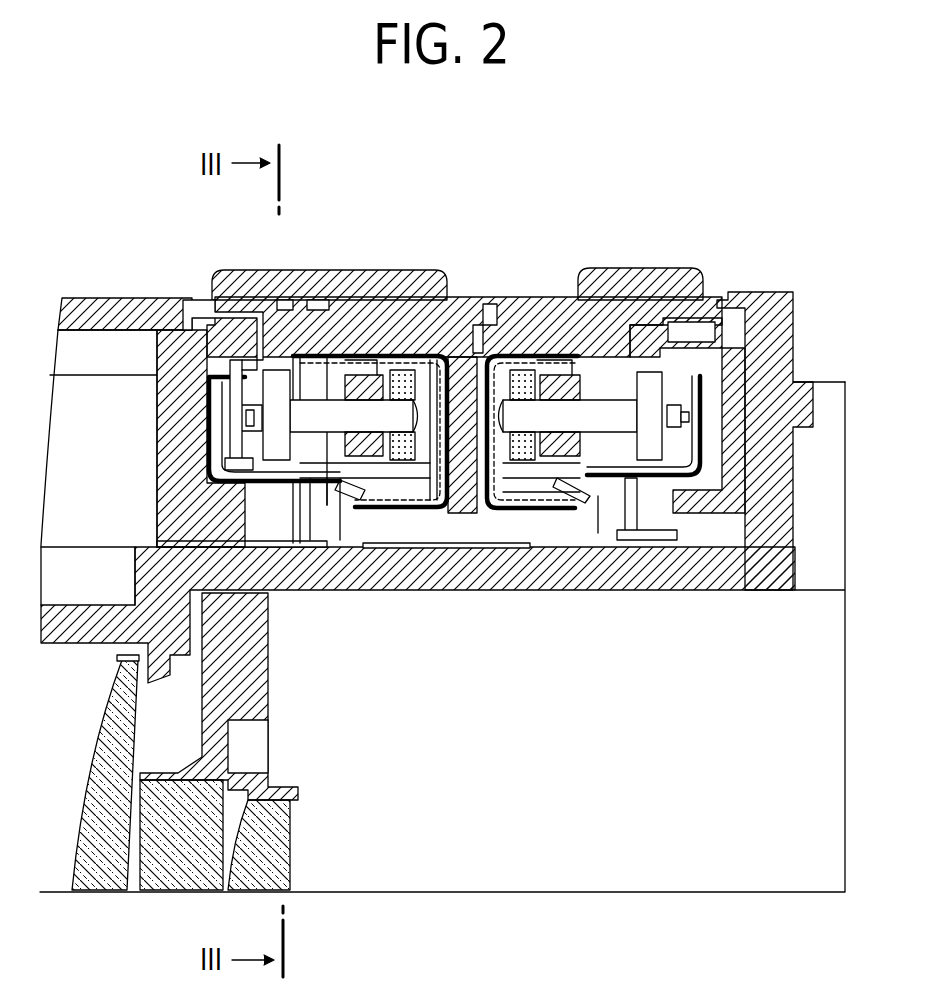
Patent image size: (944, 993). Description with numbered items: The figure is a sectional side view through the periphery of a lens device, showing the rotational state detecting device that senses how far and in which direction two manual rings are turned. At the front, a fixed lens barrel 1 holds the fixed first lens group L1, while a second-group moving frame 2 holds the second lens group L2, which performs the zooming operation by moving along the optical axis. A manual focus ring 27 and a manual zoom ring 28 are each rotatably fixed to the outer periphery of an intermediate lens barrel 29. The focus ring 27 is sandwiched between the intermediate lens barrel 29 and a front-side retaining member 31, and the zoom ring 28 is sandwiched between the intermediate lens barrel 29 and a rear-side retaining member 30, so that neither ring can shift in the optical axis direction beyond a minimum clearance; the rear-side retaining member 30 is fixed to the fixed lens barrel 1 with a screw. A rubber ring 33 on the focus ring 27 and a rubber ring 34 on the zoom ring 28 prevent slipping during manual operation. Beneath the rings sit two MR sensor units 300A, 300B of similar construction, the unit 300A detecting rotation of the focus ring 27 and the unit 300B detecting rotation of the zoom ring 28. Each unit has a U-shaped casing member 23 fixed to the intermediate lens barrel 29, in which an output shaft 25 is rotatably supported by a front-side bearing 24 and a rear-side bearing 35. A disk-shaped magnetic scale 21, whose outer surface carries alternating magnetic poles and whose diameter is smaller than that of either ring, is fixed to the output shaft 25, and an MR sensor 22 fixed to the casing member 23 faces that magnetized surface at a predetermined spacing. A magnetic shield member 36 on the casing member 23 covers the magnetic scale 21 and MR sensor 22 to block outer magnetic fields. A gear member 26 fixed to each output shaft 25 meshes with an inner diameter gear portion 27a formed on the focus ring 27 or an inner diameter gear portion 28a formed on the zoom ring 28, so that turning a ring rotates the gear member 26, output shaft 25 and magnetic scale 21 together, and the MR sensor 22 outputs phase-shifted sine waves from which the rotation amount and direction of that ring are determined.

The fixed lens barrel 1 is at (135, 577).
The second-group moving frame 2 is at (268, 652).
The magnetic scale 21 is at (403, 370).
The MR sensor 22 is at (300, 488).
The casing member 23 is at (245, 472).
The front-side bearing 24 is at (207, 422).
The output shaft 25 is at (243, 412).
The gear member 26 is at (270, 452).
The manual focus ring 27 is at (207, 300).
The inner diameter gear portion 27a is at (248, 382).
The manual zoom ring 28 is at (582, 298).
The inner diameter gear portion 28a is at (700, 332).
The intermediate lens barrel 29 is at (483, 297).
The rear-side retaining member 30 is at (763, 292).
The front-side retaining member 31 is at (66, 298).
The rubber ring 33 is at (252, 272).
The rubber ring 34 is at (640, 270).
The rear-side bearing 35 is at (362, 378).
The magnetic shield member 36 is at (505, 505).
The MR sensor unit 300A is at (375, 520).
The MR sensor unit 300B is at (548, 520).
The first lens group L1 is at (108, 745).
The second lens group L2 is at (290, 852).